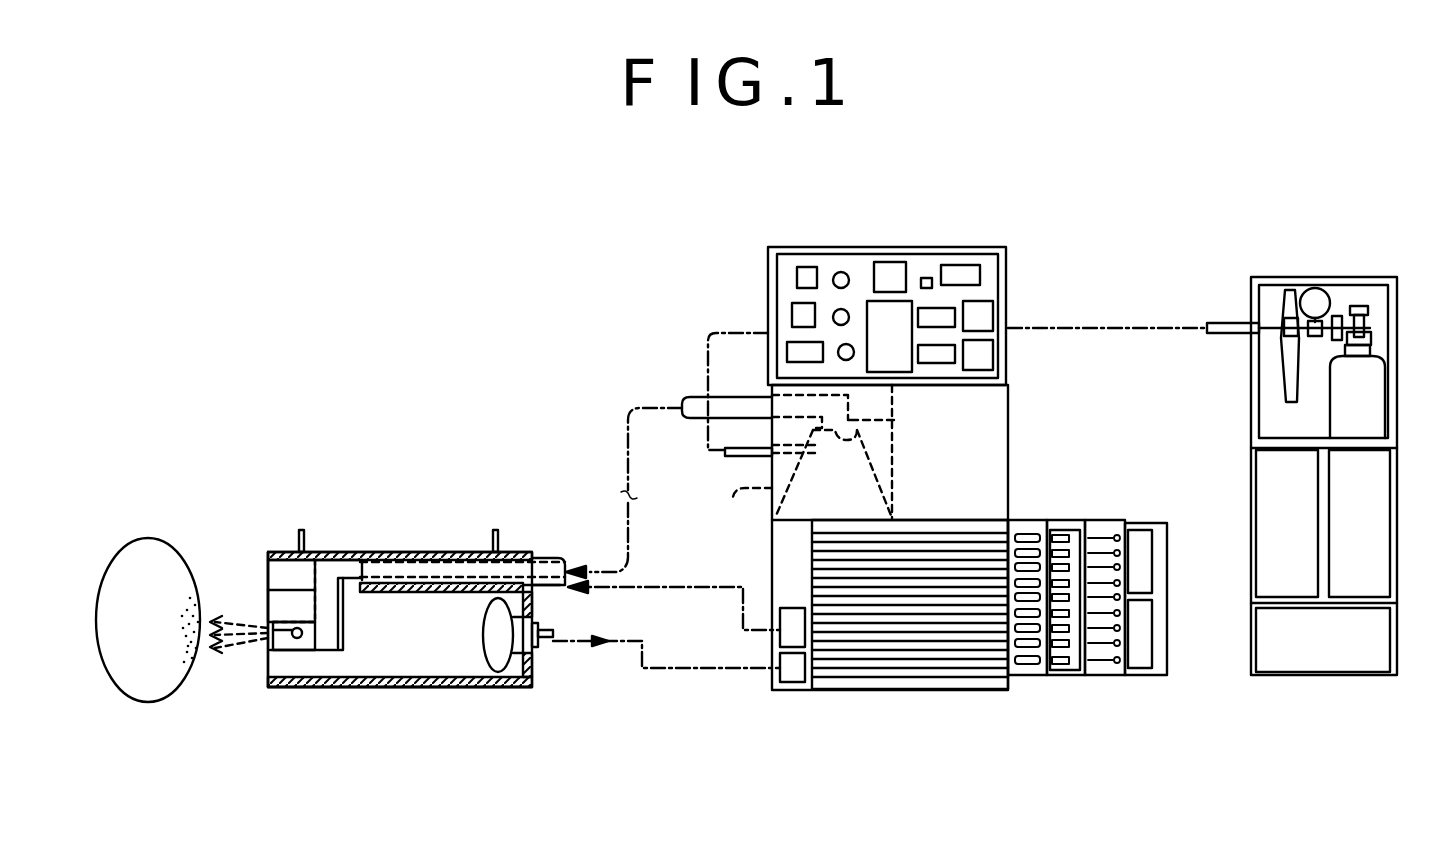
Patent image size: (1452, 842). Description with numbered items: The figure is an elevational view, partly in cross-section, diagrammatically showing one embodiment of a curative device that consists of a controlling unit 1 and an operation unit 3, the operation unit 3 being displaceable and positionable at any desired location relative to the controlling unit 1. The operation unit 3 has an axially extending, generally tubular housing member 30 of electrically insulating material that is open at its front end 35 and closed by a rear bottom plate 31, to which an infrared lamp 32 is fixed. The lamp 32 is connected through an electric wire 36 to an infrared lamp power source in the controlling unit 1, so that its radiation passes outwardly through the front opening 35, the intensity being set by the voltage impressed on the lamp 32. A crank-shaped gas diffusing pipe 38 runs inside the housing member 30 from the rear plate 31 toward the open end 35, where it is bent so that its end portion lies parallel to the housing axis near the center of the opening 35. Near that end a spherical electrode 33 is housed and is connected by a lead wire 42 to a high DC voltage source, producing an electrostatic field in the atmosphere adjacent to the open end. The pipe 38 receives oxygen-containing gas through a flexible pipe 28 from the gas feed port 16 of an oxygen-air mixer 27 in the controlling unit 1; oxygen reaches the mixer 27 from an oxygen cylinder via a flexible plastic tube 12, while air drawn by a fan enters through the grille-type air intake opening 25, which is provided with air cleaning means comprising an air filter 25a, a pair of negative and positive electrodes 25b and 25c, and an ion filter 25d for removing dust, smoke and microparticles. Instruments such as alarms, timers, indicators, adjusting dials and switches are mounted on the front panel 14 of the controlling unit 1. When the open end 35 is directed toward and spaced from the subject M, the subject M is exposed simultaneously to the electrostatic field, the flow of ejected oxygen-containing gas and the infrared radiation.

The controlling unit 1 is at (988, 240).
The operation unit 3 is at (450, 545).
The flexible plastic tube 12 is at (1228, 323).
The front panel 14 is at (913, 262).
The oxygen-containing gas feed port 16 is at (895, 422).
The air intake opening (grille) 25 is at (909, 698).
The air filter 25a is at (1028, 676).
The negative electrode 25b is at (1073, 676).
The positive electrode 25c is at (1120, 676).
The ion filter 25d is at (1160, 676).
The oxygen-air mixer 27 is at (790, 476).
The pipe 28 is at (694, 392).
The housing member 30 is at (330, 688).
The rear bottom plate 31 is at (532, 665).
The infrared lamp 32 is at (500, 660).
The electrode 33 is at (297, 630).
The front end (open end) 35 is at (266, 672).
The electric wire 36 is at (722, 669).
The gas diffusing pipe 38 is at (350, 634).
The lead wire 42 is at (678, 588).
The subject M is at (154, 530).